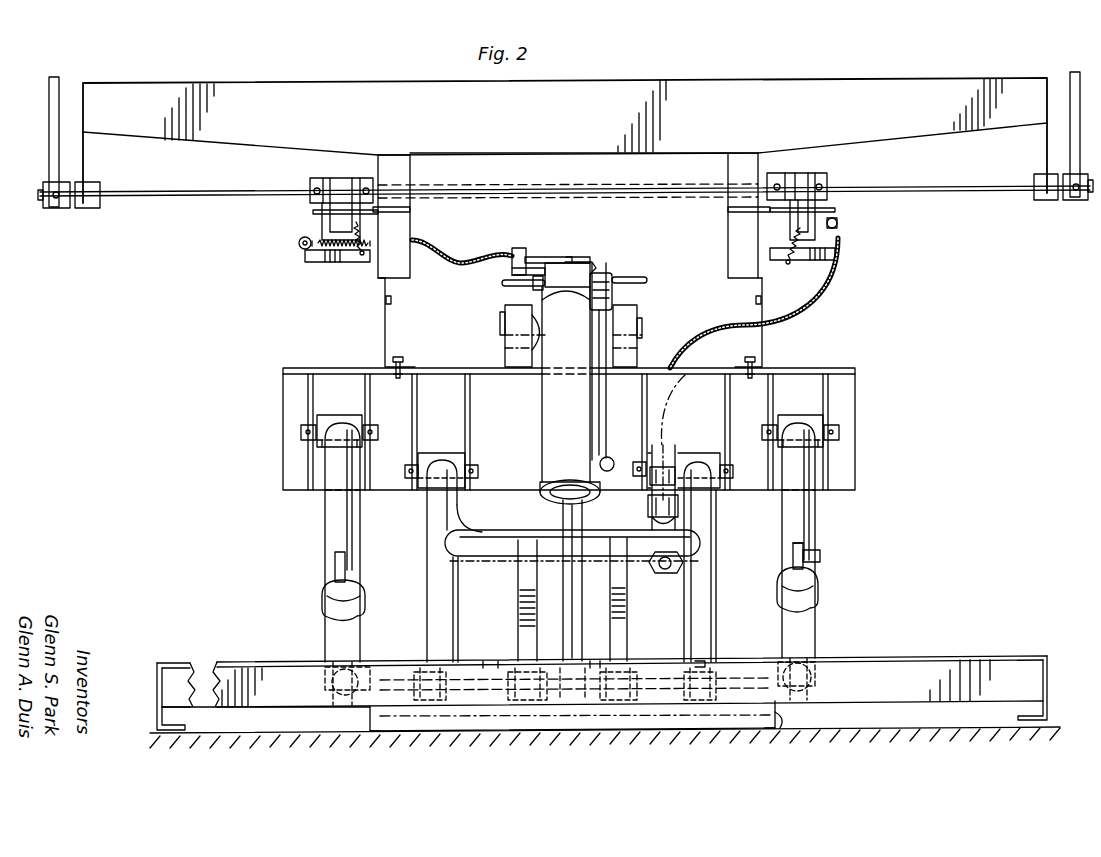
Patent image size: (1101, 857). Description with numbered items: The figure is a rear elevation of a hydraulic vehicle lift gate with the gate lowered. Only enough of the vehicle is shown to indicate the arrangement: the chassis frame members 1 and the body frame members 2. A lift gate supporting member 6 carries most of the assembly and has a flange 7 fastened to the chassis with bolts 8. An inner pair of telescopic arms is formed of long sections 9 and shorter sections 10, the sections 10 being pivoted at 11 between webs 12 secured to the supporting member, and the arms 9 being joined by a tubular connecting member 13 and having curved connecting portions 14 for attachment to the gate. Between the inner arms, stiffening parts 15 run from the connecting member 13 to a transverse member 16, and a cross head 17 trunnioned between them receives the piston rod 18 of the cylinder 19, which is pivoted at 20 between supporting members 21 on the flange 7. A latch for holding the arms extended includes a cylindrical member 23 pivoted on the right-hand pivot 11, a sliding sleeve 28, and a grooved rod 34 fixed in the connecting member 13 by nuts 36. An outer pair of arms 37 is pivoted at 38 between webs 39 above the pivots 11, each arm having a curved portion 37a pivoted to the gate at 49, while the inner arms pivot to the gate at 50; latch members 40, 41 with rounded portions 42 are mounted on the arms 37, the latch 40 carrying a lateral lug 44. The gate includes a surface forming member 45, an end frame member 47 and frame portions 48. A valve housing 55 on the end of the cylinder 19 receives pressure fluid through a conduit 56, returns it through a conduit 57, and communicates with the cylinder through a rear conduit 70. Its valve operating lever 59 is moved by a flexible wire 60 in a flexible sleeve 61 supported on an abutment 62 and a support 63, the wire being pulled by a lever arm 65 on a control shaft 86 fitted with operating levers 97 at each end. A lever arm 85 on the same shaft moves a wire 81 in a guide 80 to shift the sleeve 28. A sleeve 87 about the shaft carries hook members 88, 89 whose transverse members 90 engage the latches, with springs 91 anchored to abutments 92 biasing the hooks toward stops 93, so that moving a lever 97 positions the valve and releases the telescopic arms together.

The chassis frame member 1 is at (392, 330).
The body frame member 2 is at (410, 238).
The lift gate supporting member 6 is at (858, 386).
The flange 7 is at (300, 368).
The bolt 8 is at (401, 357).
The inner arm long section 9 is at (459, 592).
The inner arm short section 10 is at (428, 512).
The pivot 11 is at (479, 468).
The web 12 is at (466, 414).
The connecting member 13 is at (490, 538).
The curved connecting portion 14 is at (705, 661).
The stiffening part 15 is at (518, 610).
The transverse member 16 is at (490, 680).
The cross head 17 is at (585, 668).
The piston rod 18 is at (575, 606).
The cylinder 19 is at (545, 401).
The cylinder pivot 20 is at (504, 325).
The supporting member 21 is at (510, 352).
The cylindrical member 23 is at (666, 452).
The sleeve 28 is at (650, 508).
The rod 34 is at (665, 570).
The nut 36 is at (656, 572).
The outer arm 37 is at (326, 520).
The curved portion 37a is at (332, 707).
The pivot 38 is at (300, 431).
The web 39 is at (362, 392).
The latch member 40 is at (822, 573).
The latch member 41 is at (334, 568).
The cylindrical portion 42 is at (322, 596).
The lug 44 is at (805, 552).
The surface forming member 45 is at (250, 662).
The frame member 47 is at (278, 709).
The frame portion 48 is at (162, 670).
The pivot 49 is at (335, 690).
The pivot 50 is at (420, 733).
The valve housing 55 is at (600, 273).
The conduit 56 is at (642, 278).
The conduit 57 is at (502, 283).
The valve operating lever 59 is at (590, 262).
The flexible wire 60 is at (298, 246).
The flexible sleeve 61 is at (465, 256).
The abutment 62 is at (522, 250).
The support 63 is at (302, 260).
The lever arm 65 is at (312, 226).
The conduit 70 is at (594, 422).
The guide 80 is at (824, 294).
The wire 81 is at (838, 224).
The lever arm 85 is at (836, 211).
The control shaft 86 is at (150, 200).
The sleeve 87 is at (652, 185).
The hook member 88 is at (800, 185).
The hook member 89 is at (345, 180).
The latch-engaging transverse member 90 is at (322, 216).
The spring 91 is at (333, 255).
The abutment 92 is at (356, 258).
The stop 93 is at (410, 210).
The operating lever 97 is at (48, 112).